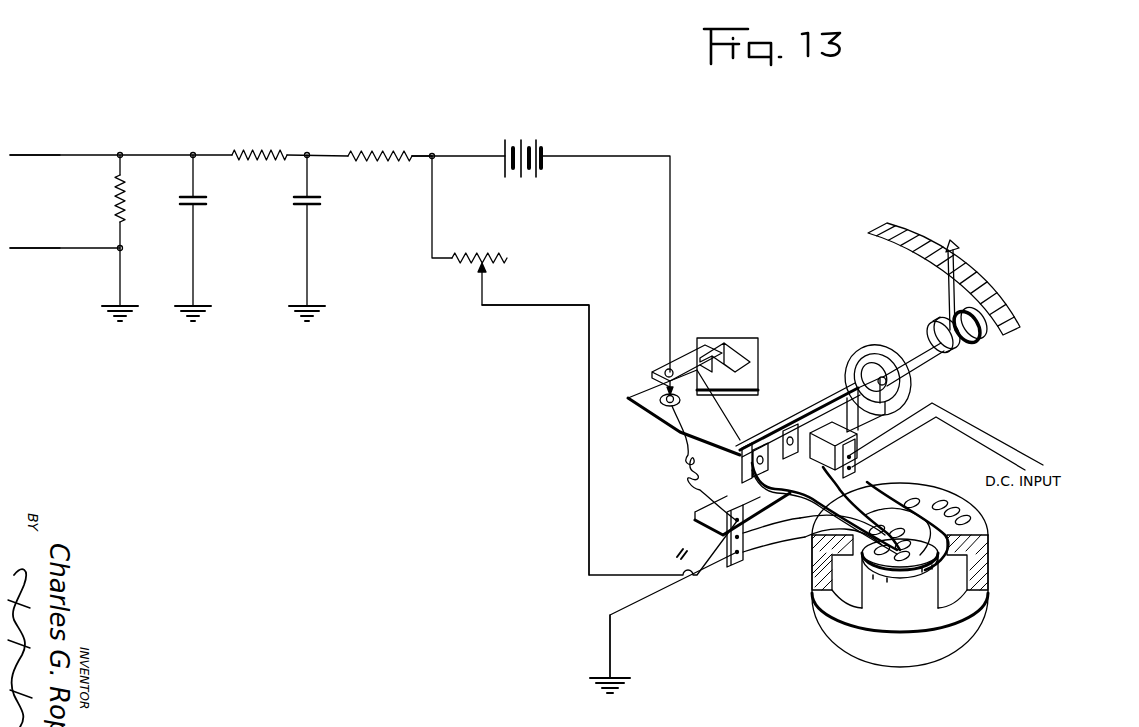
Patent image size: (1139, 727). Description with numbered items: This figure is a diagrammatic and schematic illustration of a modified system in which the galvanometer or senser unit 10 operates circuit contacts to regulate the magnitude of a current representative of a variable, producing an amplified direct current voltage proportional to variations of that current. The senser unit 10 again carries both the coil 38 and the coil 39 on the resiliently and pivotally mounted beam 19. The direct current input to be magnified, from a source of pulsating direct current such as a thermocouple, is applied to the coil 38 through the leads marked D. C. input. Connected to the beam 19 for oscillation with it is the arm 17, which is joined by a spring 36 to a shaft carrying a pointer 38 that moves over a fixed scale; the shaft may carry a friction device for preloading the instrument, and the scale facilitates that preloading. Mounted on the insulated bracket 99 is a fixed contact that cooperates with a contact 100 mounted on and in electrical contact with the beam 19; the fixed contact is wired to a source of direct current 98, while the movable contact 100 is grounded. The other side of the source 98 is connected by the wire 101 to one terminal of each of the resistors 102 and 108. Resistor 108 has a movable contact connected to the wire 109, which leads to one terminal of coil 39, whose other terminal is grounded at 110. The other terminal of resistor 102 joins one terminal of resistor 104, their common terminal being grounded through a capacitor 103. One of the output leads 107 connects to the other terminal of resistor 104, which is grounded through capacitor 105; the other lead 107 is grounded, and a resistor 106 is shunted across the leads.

The senser unit 10 is at (924, 575).
The arm 17 is at (826, 400).
The beam 19 is at (740, 436).
The spring 36 is at (913, 392).
The coil 38 is at (966, 252).
The coil 39 is at (900, 580).
The source of direct current 98 is at (536, 148).
The insulated bracket 99 is at (676, 366).
The contact 100 is at (664, 412).
The wire 101 is at (416, 160).
The resistor 102 is at (396, 150).
The capacitor 103 is at (319, 203).
The resistor 104 is at (265, 150).
The capacitor 105 is at (206, 202).
The resistor 106 is at (121, 219).
The output leads 107 is at (62, 157).
The resistor 108 is at (480, 250).
The wire 109 is at (538, 307).
The ground 110 is at (618, 676).